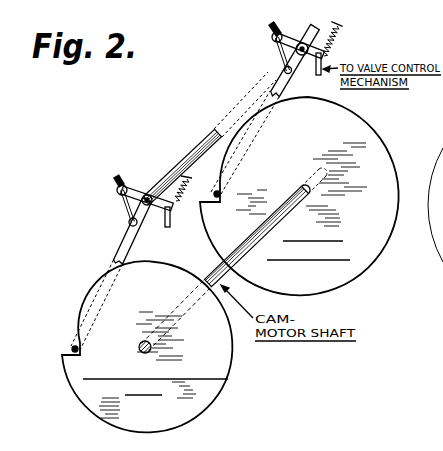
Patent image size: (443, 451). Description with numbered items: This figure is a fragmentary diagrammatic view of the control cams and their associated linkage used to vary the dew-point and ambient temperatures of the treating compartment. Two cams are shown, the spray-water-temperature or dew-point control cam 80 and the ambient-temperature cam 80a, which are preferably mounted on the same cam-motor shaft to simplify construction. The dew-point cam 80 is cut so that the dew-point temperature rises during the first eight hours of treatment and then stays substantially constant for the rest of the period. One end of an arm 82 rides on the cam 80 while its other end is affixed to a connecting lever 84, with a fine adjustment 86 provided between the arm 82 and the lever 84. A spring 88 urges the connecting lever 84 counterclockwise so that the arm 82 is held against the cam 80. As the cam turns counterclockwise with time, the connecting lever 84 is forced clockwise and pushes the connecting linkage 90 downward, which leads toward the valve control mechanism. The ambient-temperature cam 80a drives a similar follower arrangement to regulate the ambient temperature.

The spray-water-temperature cam 80 is at (222, 352).
The ambient-temperature cam 80a is at (362, 124).
The arm 82 is at (126, 239).
The connecting lever 84 is at (145, 194).
The fine adjustment 86 is at (124, 204).
The spring 88 is at (177, 207).
The connecting linkage 90 is at (166, 228).